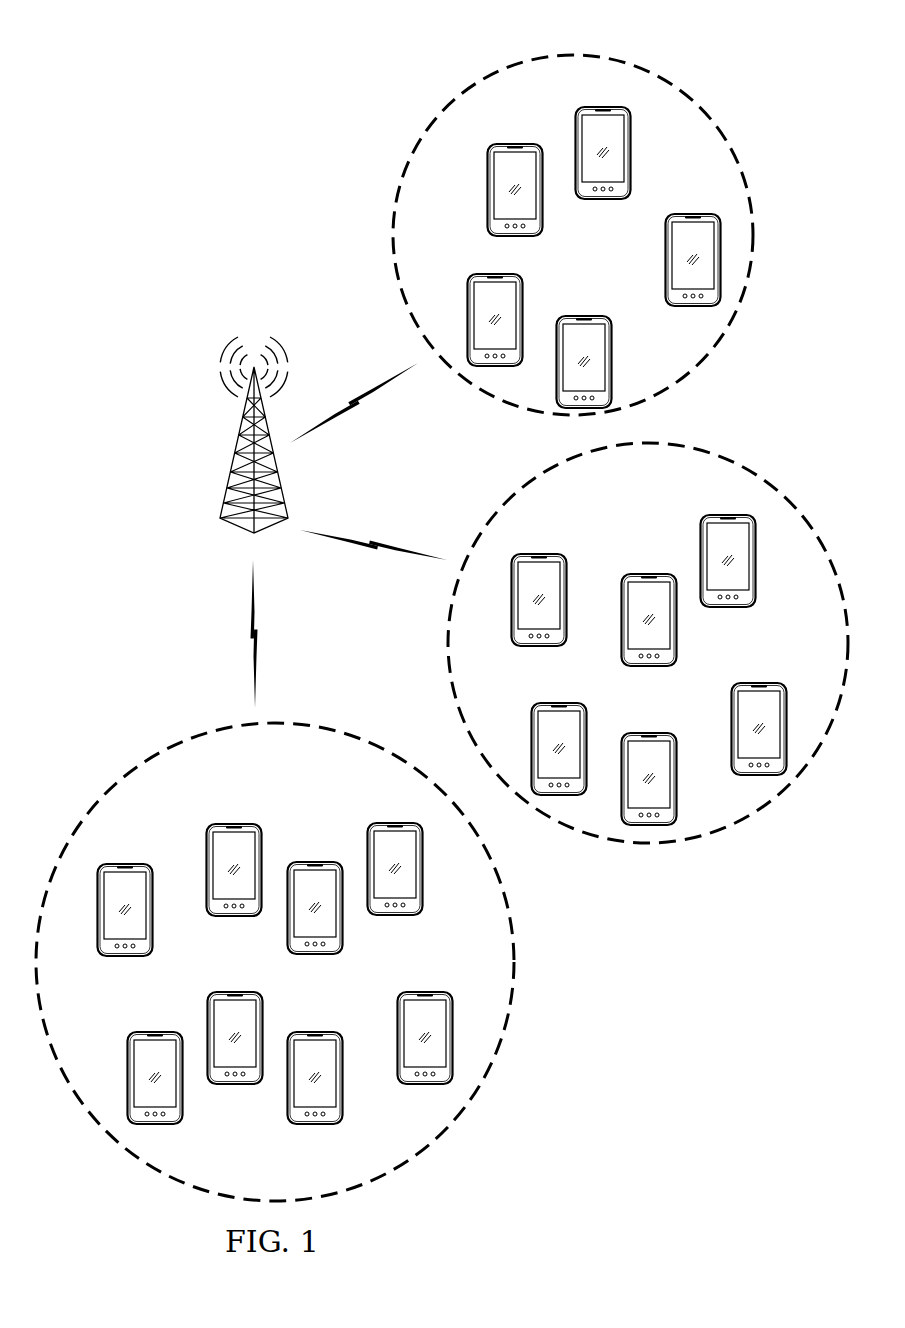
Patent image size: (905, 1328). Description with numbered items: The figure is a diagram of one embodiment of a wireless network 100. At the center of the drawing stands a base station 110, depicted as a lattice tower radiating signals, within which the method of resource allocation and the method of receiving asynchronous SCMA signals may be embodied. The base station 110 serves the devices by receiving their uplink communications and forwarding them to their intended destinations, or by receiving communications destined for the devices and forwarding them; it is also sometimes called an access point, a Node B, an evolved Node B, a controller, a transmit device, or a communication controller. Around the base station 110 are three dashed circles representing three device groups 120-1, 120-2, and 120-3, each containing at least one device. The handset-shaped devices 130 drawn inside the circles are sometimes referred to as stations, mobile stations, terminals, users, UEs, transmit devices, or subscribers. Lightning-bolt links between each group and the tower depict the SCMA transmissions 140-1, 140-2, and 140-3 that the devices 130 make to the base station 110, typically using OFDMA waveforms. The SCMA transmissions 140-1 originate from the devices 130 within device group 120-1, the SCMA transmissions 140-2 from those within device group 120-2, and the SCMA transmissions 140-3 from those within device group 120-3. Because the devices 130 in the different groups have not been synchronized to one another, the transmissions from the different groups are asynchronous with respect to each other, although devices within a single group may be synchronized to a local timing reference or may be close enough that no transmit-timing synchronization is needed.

The wireless network 100 is at (188, 175).
The base station 110 is at (237, 448).
The device group 120-1 is at (586, 50).
The device group 120-2 is at (648, 671).
The device group 120-3 is at (524, 980).
The device 130 is at (649, 573).
The SCMA transmission 140-1 is at (387, 385).
The SCMA transmission 140-2 is at (412, 550).
The SCMA transmission 140-3 is at (252, 672).